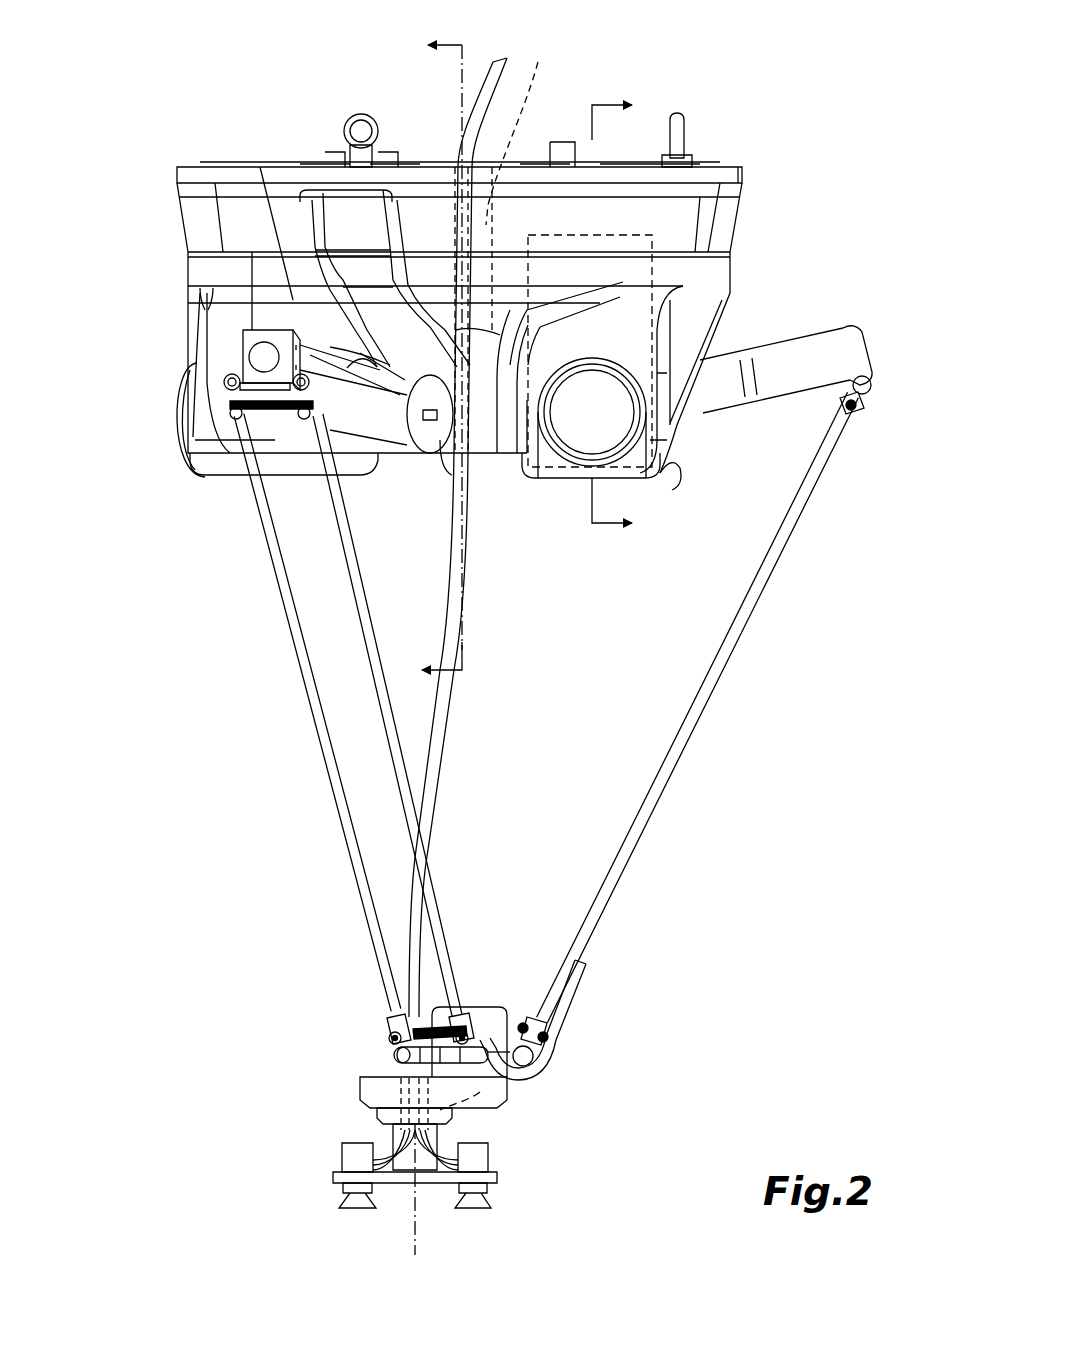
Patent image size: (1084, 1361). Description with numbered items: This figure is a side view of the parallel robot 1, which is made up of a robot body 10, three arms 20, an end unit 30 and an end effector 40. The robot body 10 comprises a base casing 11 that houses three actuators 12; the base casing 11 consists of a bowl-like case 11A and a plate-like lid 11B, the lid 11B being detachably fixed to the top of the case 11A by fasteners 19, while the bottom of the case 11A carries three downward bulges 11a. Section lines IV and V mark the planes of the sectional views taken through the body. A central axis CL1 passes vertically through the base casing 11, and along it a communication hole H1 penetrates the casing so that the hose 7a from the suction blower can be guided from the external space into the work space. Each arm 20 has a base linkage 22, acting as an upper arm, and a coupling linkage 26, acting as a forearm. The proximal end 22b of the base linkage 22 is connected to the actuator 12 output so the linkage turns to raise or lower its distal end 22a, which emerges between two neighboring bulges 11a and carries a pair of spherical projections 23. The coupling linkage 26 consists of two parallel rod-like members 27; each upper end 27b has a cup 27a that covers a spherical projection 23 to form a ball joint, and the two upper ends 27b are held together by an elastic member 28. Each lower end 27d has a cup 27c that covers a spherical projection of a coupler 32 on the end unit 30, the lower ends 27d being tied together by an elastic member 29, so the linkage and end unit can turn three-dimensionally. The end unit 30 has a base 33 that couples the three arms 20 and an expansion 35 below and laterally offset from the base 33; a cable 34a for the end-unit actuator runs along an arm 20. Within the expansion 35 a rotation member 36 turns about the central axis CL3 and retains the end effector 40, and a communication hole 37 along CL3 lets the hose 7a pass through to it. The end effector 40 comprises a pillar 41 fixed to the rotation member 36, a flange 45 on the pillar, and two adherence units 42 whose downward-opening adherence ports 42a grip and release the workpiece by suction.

The parallel robot 1 is at (755, 98).
The hose 7a is at (482, 75).
The robot body 10 is at (765, 207).
The base casing 11 is at (103, 120).
The case 11A is at (186, 252).
The lid 11B is at (235, 165).
The bulge 11a is at (200, 478).
The actuator 12 is at (540, 470).
The fastener 19 is at (355, 122).
The arm 20 is at (282, 666).
The base linkage 22 is at (390, 440).
The distal end 22a is at (257, 330).
The proximal end 22b is at (447, 477).
The spherical projection 23 is at (243, 408).
The coupling linkage 26 is at (252, 718).
The rod-like member 27 is at (320, 736).
The cup 27a is at (228, 384).
The upper end 27b is at (240, 460).
The cup 27c is at (535, 1057).
The lower end 27d is at (487, 1030).
The elastic member 28 is at (252, 435).
The elastic member 29 is at (418, 1028).
The end unit 30 is at (322, 1060).
The coupler 32 is at (506, 1045).
The base 33 is at (484, 1010).
The cable 34a is at (588, 965).
The expansion 35 is at (370, 1090).
The rotation member 36 is at (448, 1122).
The communication hole 37 is at (480, 1092).
The end effector 40 is at (292, 1170).
The pillar 41 is at (385, 1142).
The adherence unit 42 is at (480, 1158).
The adherence port 42a is at (357, 1208).
The flange 45 is at (400, 1183).
The central axis CL1 is at (455, 103).
The central axis CL3 is at (417, 1252).
The communication hole H1 is at (528, 243).
The section line V- V is at (440, 358).
The section line IV- IV is at (612, 317).